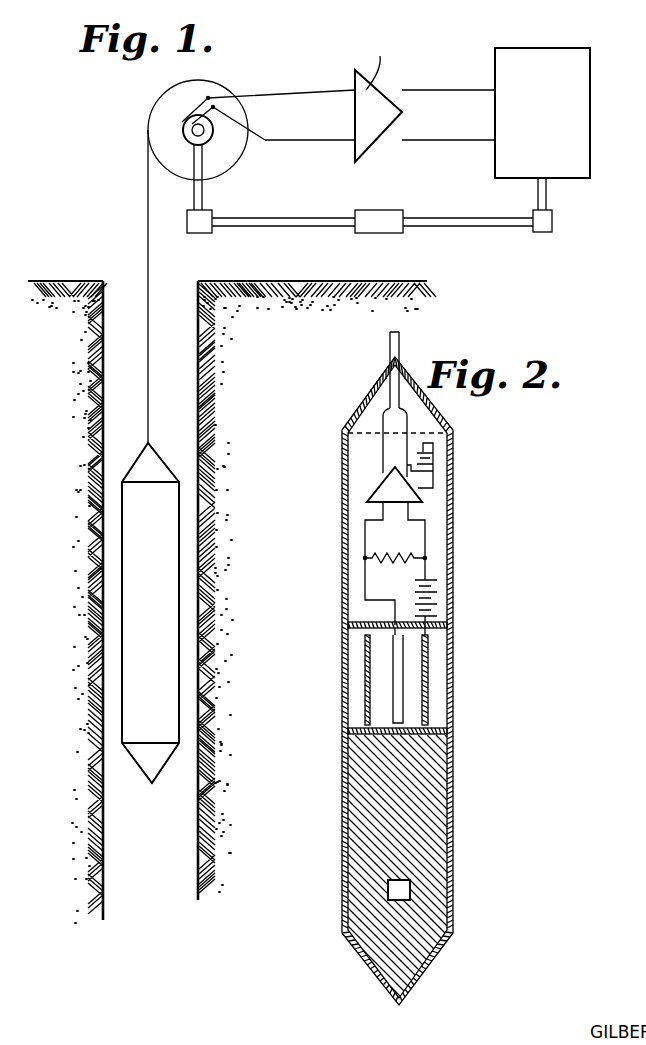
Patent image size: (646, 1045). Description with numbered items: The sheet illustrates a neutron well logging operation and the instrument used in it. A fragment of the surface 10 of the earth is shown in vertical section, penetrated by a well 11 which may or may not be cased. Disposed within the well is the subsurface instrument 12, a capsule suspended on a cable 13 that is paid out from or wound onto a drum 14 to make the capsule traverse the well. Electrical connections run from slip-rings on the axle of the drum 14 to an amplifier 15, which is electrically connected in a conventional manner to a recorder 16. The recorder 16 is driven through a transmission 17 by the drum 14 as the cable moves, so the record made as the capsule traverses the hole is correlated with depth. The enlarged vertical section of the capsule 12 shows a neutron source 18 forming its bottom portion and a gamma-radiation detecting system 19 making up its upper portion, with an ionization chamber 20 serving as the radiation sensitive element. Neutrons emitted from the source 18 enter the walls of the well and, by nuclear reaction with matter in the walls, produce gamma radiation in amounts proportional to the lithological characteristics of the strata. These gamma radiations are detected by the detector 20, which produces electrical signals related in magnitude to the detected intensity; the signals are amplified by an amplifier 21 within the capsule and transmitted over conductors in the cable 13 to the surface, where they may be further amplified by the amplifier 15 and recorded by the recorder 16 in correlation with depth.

In FIG. 1, the surface of the earth 10 is at (253, 364).
In FIG. 1, the well 11 is at (153, 798).
In FIG. 1, the subsurface instrument 12 is at (188, 537).
In FIG. 2, the subsurface instrument 12 is at (458, 434).
In FIG. 1, the cable 13 is at (149, 323).
In FIG. 2, the cable 13 is at (400, 345).
In FIG. 1, the drum 14 is at (208, 98).
In FIG. 1, the amplifier 15 is at (402, 112).
In FIG. 1, the recorder 16 is at (591, 112).
In FIG. 1, the transmission 17 is at (372, 234).
In FIG. 2, the neutron source 18 is at (420, 830).
In FIG. 2, the gamma-radiation detecting system 19 is at (423, 518).
In FIG. 2, the ionization chamber 20 is at (417, 682).
In FIG. 2, the amplifier 21 is at (380, 483).